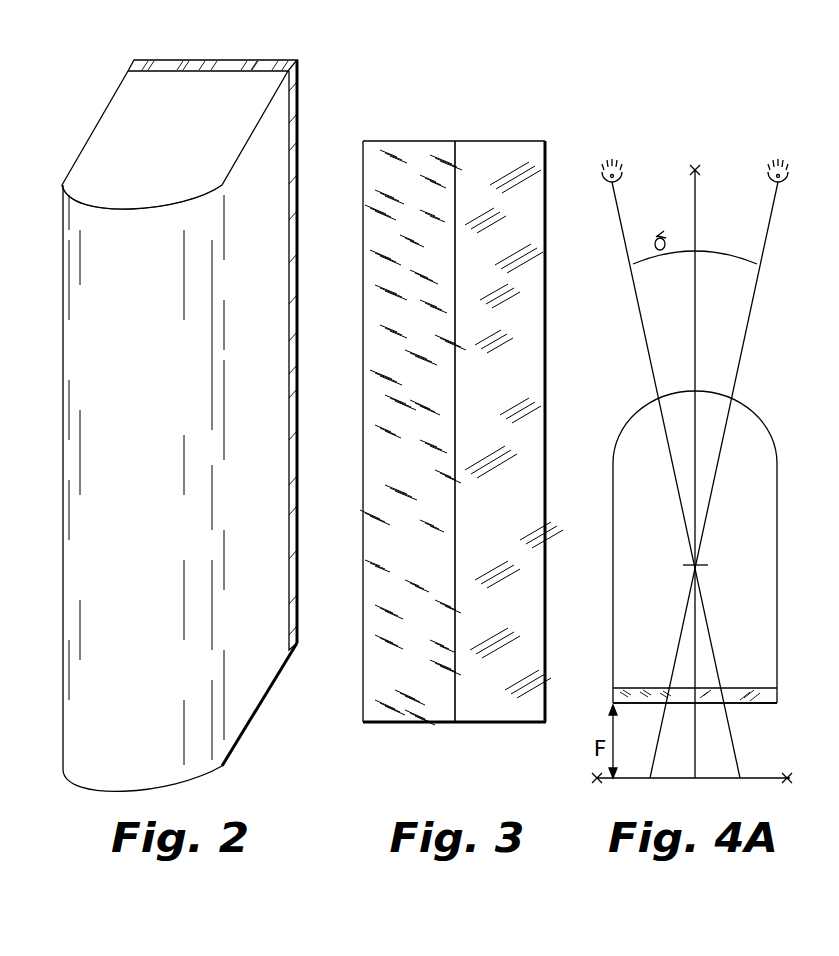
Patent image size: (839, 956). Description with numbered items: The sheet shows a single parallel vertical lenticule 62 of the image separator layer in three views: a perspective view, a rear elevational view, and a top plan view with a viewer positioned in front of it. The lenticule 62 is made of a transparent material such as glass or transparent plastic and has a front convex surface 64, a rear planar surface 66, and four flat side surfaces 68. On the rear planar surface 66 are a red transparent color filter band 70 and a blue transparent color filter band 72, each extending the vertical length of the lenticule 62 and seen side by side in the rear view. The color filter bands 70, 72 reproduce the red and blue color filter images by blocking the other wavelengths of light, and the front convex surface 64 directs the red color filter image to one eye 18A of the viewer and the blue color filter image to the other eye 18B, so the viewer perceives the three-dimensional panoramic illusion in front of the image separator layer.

In FIG. 2, the parallel vertical lenticule 62 is at (330, 82).
In FIG. 3, the parallel vertical lenticule 62 is at (510, 100).
In FIG. 2, the front convex surface 64 is at (112, 394).
In FIG. 4A, the front convex surface 64 is at (752, 412).
In FIG. 2, the rear planar surface 66 is at (297, 588).
In FIG. 4A, the rear planar surface 66 is at (752, 715).
In FIG. 2, the flat side surface 68 is at (142, 155).
In FIG. 3, the red transparent color filter band 70 is at (413, 720).
In FIG. 4A, the red transparent color filter band 70 is at (633, 705).
In FIG. 3, the blue transparent color filter band 72 is at (500, 720).
In FIG. 4A, the blue transparent color filter band 72 is at (779, 700).
In FIG. 4A, the one eye 18A is at (613, 163).
In FIG. 4A, the other eye 18B is at (777, 163).